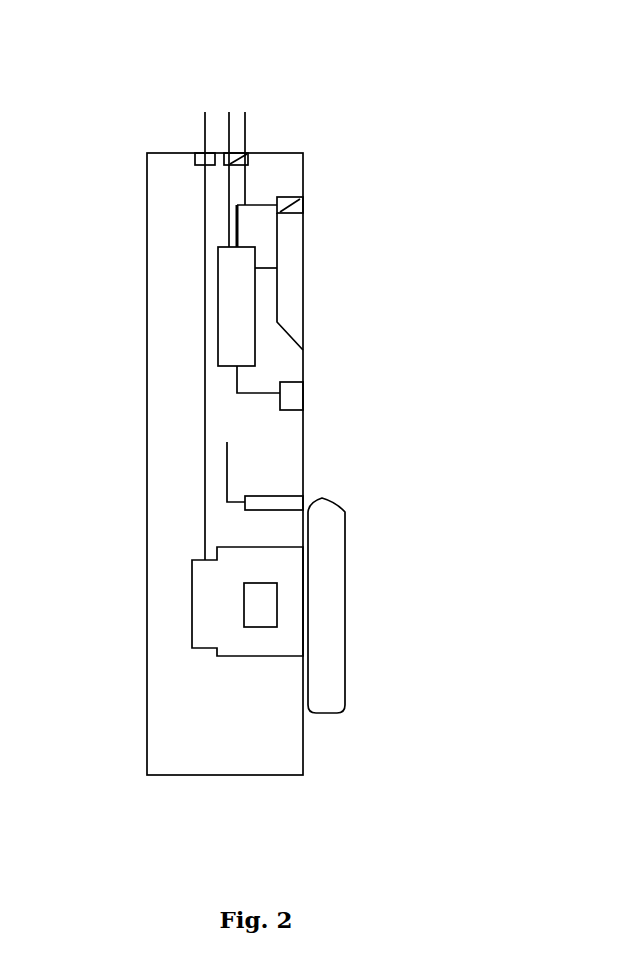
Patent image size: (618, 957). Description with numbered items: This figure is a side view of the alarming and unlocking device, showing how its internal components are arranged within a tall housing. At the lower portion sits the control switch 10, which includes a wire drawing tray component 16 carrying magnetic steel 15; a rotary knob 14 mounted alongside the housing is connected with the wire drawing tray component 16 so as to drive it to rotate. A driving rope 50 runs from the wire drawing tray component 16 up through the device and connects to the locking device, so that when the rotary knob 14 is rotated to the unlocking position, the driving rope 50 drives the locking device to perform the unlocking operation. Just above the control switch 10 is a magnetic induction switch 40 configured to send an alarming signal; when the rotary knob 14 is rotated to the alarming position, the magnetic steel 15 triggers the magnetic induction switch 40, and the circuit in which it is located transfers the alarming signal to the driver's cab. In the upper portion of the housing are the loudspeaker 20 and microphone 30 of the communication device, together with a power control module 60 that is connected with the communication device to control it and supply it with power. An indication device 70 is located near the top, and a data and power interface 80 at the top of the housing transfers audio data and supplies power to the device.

The control switch 10 is at (325, 733).
The rotary knob 14 is at (330, 610).
The magnetic steel 15 is at (258, 627).
The wire drawing tray component 16 is at (208, 629).
The loudspeaker 20 is at (293, 295).
The microphone 30 is at (300, 395).
The magnetic induction switch 40 is at (302, 482).
The driving rope 50 is at (205, 452).
The power control module 60 is at (232, 307).
The indication device 70 is at (298, 197).
The data and power interface 80 is at (247, 155).